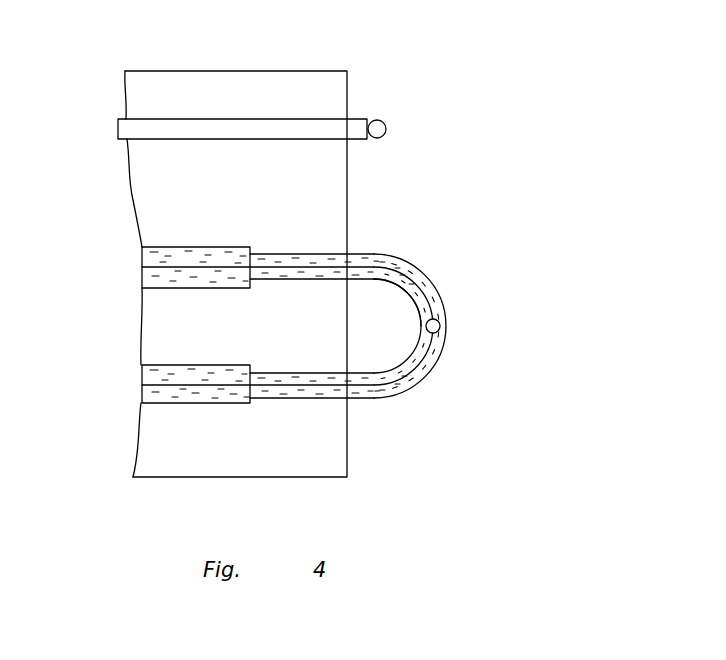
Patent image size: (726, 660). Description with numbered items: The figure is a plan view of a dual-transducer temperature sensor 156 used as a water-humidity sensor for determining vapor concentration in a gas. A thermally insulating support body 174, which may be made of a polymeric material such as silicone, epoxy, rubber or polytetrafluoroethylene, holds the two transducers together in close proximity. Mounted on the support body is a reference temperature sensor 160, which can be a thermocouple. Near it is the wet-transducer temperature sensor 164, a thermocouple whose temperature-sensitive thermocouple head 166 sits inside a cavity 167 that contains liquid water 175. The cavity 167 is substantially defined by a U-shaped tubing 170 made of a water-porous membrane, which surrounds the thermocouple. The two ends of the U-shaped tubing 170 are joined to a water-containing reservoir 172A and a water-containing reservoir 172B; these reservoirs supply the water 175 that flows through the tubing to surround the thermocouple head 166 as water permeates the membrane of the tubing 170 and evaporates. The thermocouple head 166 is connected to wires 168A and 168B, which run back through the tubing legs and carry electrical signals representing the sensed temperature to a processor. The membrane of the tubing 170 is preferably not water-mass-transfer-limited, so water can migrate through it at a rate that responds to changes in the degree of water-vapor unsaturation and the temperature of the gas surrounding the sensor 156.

The dual-transducer temperature sensor 156 is at (507, 110).
The reference temperature sensor 160 is at (384, 123).
The wet-transducer temperature sensor 164 is at (357, 321).
The thermocouple head 166 is at (442, 323).
The cavity 167 is at (433, 367).
The wire 168A is at (317, 267).
The wire 168B is at (363, 398).
The U-shaped tubing 170 is at (415, 267).
The water-containing reservoir 172A is at (177, 252).
The water-containing reservoir 172B is at (228, 398).
The thermally insulating support body 174 is at (318, 71).
The liquid water 175 is at (413, 380).